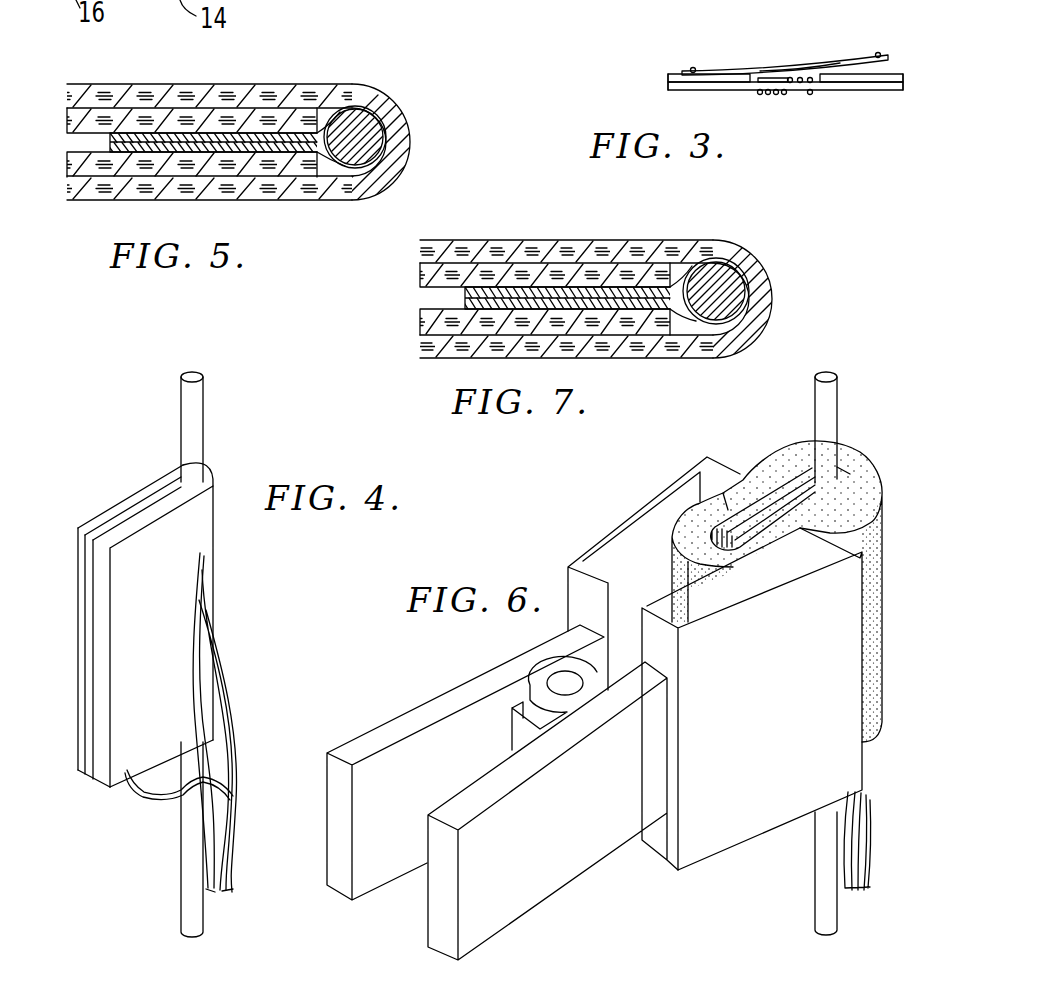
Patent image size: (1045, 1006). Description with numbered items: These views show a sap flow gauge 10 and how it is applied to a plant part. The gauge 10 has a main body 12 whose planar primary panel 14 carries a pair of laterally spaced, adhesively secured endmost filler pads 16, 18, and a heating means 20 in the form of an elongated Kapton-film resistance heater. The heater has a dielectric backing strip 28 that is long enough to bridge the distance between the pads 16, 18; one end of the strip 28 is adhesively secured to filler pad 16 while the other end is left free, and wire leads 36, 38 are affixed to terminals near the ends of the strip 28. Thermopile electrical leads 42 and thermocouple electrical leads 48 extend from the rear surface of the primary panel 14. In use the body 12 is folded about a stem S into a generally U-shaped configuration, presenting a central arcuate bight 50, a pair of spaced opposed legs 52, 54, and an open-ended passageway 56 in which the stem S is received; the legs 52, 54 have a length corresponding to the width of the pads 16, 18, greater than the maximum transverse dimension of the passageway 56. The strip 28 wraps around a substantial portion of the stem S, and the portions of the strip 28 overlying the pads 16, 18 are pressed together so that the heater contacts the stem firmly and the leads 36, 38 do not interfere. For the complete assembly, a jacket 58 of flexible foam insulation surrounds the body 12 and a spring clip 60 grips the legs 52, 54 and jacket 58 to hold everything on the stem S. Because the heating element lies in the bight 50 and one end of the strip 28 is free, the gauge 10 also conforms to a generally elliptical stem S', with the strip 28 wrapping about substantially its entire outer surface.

In FIG. 3, the sap flow gauge 10 is at (640, 59).
In FIG. 4, the sap flow gauge 10 is at (162, 470).
In FIG. 6, the sap flow gauge 10 is at (788, 474).
In FIG. 3, the main body 12 is at (665, 86).
In FIG. 5, the primary panel 14 is at (340, 88).
In FIG. 3, the primary panel 14 is at (860, 90).
In FIG. 7, the primary panel 14 is at (690, 247).
In FIG. 4, the primary panel 14 is at (184, 526).
In FIG. 6, the primary panel 14 is at (840, 470).
In FIG. 5, the filler pad 16 is at (200, 118).
In FIG. 3, the filler pad 16 is at (718, 80).
In FIG. 7, the filler pad 16 is at (518, 280).
In FIG. 4, the filler pad 16 is at (90, 690).
In FIG. 5, the filler pad 18 is at (245, 165).
In FIG. 3, the filler pad 18 is at (886, 76).
In FIG. 7, the filler pad 18 is at (607, 325).
In FIG. 4, the filler pad 18 is at (95, 602).
In FIG. 3, the heating means 20 is at (792, 62).
In FIG. 5, the backing strip 28 is at (380, 166).
In FIG. 3, the backing strip 28 is at (745, 69).
In FIG. 7, the backing strip 28 is at (742, 312).
In FIG. 3, the wire lead 36 is at (691, 68).
In FIG. 4, the wire lead 36 is at (233, 838).
In FIG. 3, the wire lead 38 is at (876, 53).
In FIG. 4, the wire lead 38 is at (166, 782).
In FIG. 3, the thermopile electrical leads 42 is at (814, 121).
In FIG. 4, the thermopile electrical leads 42 is at (190, 655).
In FIG. 3, the electrical leads 48 is at (790, 102).
In FIG. 4, the electrical leads 48 is at (217, 608).
In FIG. 5, the central arcuate bight 50 is at (417, 140).
In FIG. 7, the central arcuate bight 50 is at (775, 290).
In FIG. 4, the central arcuate bight 50 is at (217, 462).
In FIG. 5, the leg 52 is at (182, 80).
In FIG. 7, the leg 52 is at (566, 238).
In FIG. 4, the leg 52 is at (100, 512).
In FIG. 5, the leg 54 is at (113, 202).
In FIG. 7, the leg 54 is at (424, 361).
In FIG. 4, the leg 54 is at (116, 793).
In FIG. 5, the open-ended passageway 56 is at (320, 168).
In FIG. 7, the open-ended passageway 56 is at (680, 325).
In FIG. 6, the jacket 58 is at (876, 527).
In FIG. 6, the spring clip 60 is at (758, 820).
In FIG. 5, the stem S is at (361, 118).
In FIG. 4, the stem S is at (209, 644).
In FIG. 6, the stem S is at (839, 643).
In FIG. 7, the elliptical stem S' is at (724, 271).